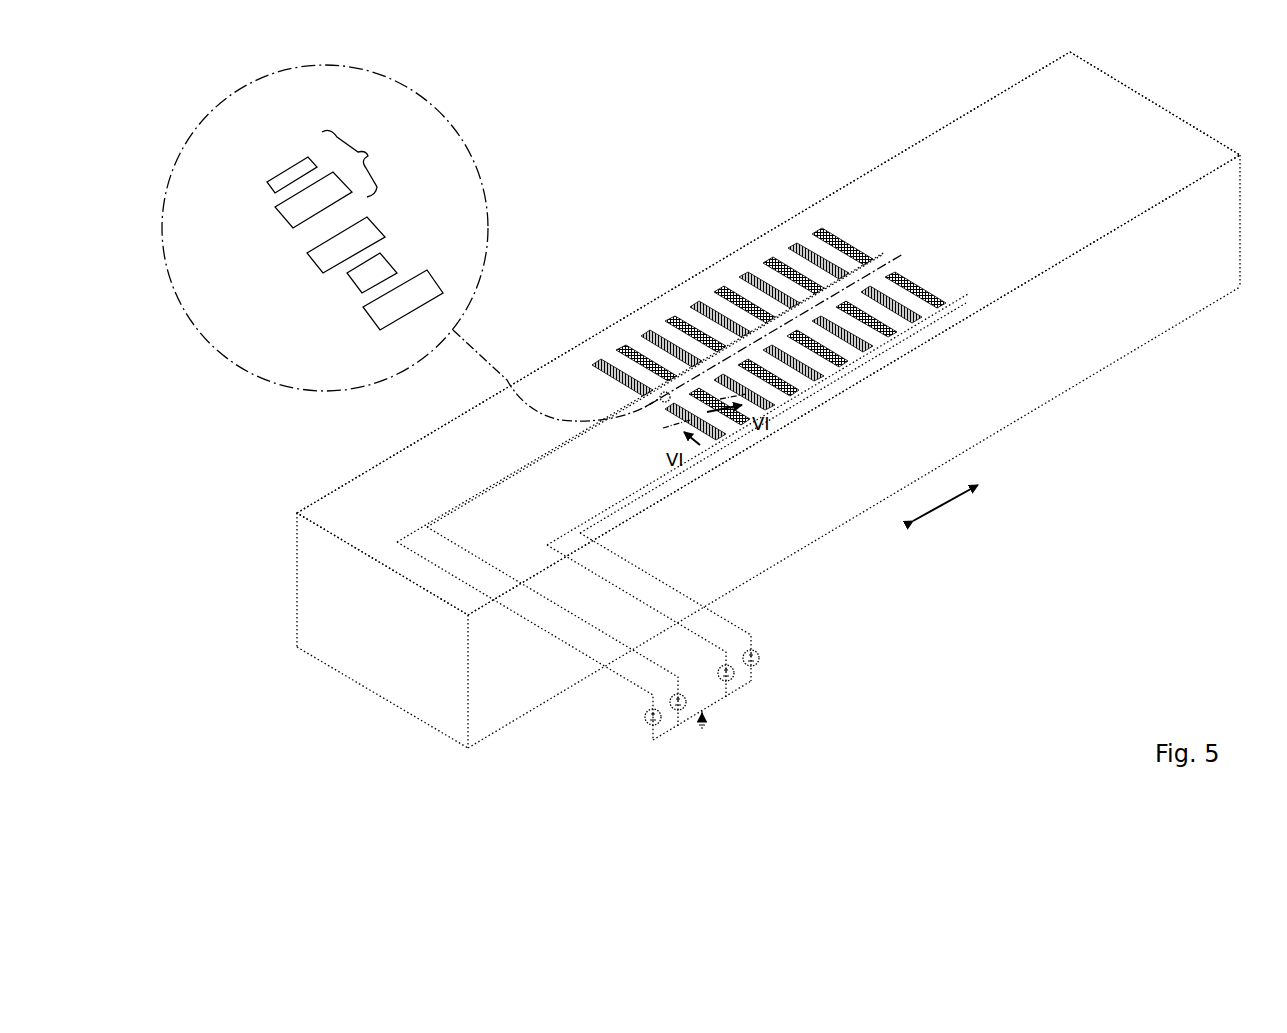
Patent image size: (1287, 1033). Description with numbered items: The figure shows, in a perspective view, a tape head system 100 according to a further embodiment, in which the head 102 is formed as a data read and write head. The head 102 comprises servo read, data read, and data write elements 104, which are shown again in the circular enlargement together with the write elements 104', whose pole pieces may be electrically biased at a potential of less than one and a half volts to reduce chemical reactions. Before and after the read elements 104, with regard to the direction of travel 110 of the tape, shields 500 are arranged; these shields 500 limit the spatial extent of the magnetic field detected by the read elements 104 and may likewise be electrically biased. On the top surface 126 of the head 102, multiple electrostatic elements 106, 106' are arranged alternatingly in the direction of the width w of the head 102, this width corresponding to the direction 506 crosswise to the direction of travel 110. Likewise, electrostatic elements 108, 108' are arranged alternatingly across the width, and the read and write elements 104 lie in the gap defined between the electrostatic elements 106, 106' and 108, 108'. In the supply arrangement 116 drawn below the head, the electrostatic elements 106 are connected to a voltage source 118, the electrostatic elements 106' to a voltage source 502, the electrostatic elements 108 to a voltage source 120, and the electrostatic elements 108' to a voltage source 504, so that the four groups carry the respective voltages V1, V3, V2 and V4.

The tape head system 100 is at (485, 120).
The head 102 is at (1124, 330).
The read elements 104 is at (357, 300).
The write elements 104' is at (340, 173).
The electrostatic elements 106 is at (641, 356).
The electrostatic elements 106' is at (654, 330).
The electrostatic elements 108 is at (757, 415).
The electrostatic elements 108' is at (776, 402).
The direction of travel 110 is at (613, 146).
The voltage supply arrangement 116 is at (790, 651).
The voltage source 118 is at (643, 721).
The voltage source 120 is at (733, 678).
The top surface 126 is at (1005, 158).
The shields 500 is at (328, 258).
The voltage source 502 is at (682, 712).
The voltage source 504 is at (762, 663).
The direction crosswise to the direction of travel 506 is at (945, 505).